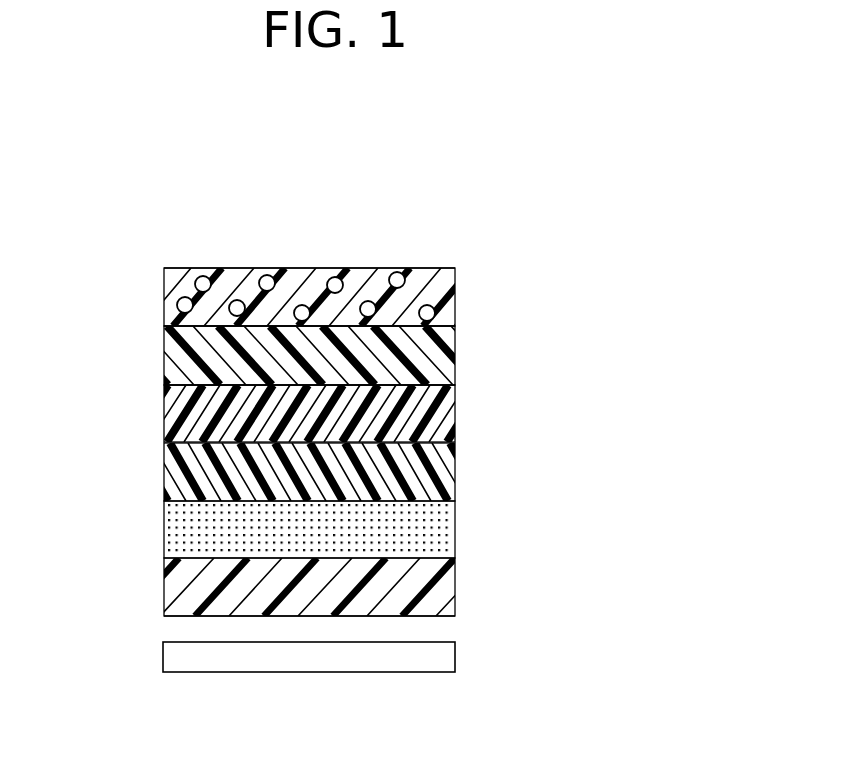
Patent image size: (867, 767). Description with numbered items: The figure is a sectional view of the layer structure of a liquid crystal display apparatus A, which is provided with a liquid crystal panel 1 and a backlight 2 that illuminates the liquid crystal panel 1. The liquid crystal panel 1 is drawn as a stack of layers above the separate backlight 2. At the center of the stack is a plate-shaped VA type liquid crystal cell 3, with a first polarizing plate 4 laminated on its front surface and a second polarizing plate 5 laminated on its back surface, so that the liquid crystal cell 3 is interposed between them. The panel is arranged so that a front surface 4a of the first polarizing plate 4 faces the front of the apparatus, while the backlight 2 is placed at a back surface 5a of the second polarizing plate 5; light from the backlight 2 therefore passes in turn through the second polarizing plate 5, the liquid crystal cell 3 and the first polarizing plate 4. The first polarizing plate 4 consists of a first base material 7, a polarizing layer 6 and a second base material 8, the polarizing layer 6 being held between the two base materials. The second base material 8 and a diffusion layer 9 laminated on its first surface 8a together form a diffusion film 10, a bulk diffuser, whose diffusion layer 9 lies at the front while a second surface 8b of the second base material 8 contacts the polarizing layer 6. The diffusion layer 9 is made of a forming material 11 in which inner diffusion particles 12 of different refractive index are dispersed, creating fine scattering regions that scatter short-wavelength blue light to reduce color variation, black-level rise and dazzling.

The liquid crystal panel 1 is at (378, 400).
The backlight 2 is at (455, 654).
The liquid crystal cell 3 is at (455, 523).
The first polarizing plate 4 is at (355, 333).
The front surface of the first polarizing plate 4a is at (432, 268).
The second polarizing plate 5 is at (329, 596).
The back surface of the second polarizing plate 5a is at (175, 614).
The polarizing layer 6 is at (455, 407).
The first base material 7 is at (356, 472).
The second base material 8 is at (304, 374).
The first surface of the second base material 8a is at (166, 312).
The second surface of the second base material 8b is at (168, 403).
The diffusion layer 9 is at (324, 245).
The diffusion film 10 is at (331, 304).
The forming material 11 is at (242, 279).
The inner diffusion particles 12 is at (337, 279).
The liquid crystal display apparatus A is at (699, 229).